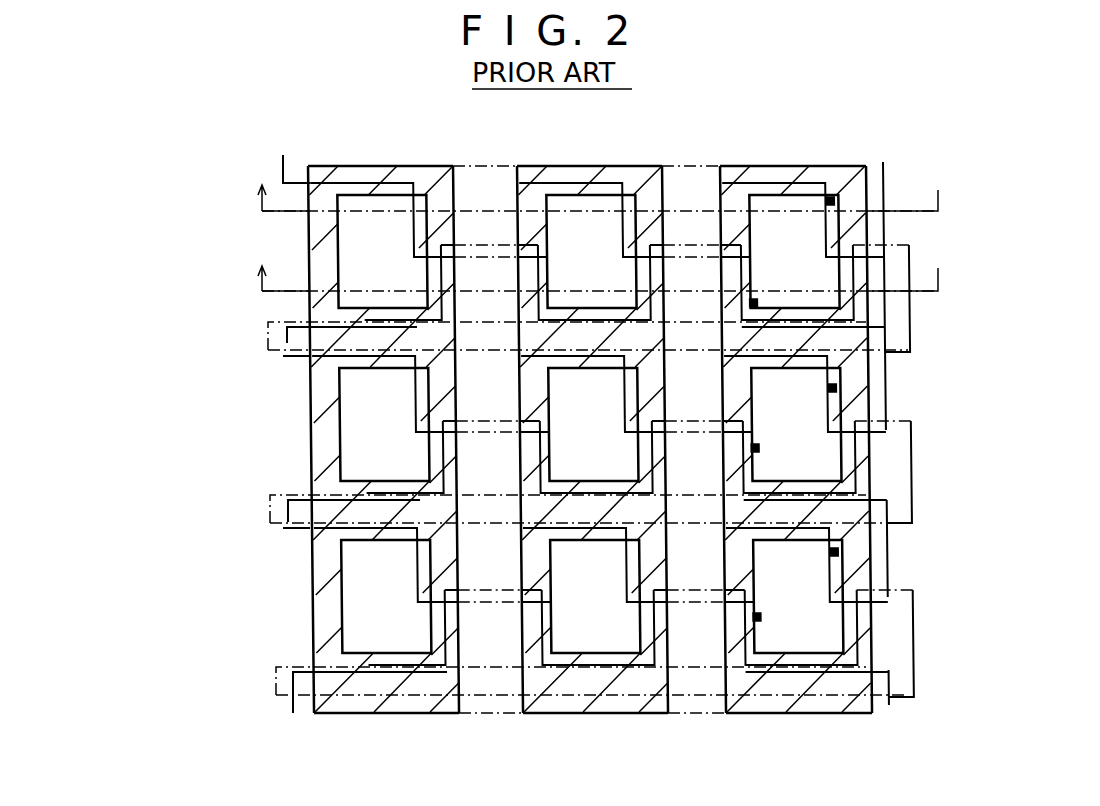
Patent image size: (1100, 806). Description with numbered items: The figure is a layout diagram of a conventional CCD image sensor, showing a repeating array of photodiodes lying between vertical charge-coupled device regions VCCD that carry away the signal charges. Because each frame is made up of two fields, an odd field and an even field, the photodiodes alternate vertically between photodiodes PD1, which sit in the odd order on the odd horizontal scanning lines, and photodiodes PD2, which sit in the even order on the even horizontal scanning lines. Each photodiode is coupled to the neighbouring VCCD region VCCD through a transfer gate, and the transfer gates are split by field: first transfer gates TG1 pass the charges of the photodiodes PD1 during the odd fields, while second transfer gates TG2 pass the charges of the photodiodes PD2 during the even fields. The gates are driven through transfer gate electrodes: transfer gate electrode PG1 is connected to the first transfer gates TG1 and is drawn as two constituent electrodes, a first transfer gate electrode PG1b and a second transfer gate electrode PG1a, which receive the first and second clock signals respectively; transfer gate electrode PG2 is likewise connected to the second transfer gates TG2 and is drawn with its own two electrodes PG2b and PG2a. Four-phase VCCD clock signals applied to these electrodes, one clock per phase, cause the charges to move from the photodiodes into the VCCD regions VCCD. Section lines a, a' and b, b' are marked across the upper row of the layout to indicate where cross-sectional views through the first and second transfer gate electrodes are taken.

The VCCD region VCCD is at (489, 177).
The photodiode arranged in odd order PD1 is at (347, 298).
The photodiode arranged in even order PD2 is at (370, 420).
The first transfer gate TG1 is at (418, 240).
The second transfer gate TG2 is at (423, 408).
The transfer gate electrode PG1 is at (100, 226).
The second transfer gate electrode PG1a is at (275, 333).
The first transfer gate electrode PG1b is at (283, 166).
The transfer gate electrode PG2 is at (116, 398).
The transfer gate electrode portion PG2a is at (275, 497).
The transfer gate electrode portion PG2b is at (283, 357).
The section line a is at (587, 201).
The section line a' is at (917, 200).
The section line b is at (587, 276).
The section line b' is at (917, 276).